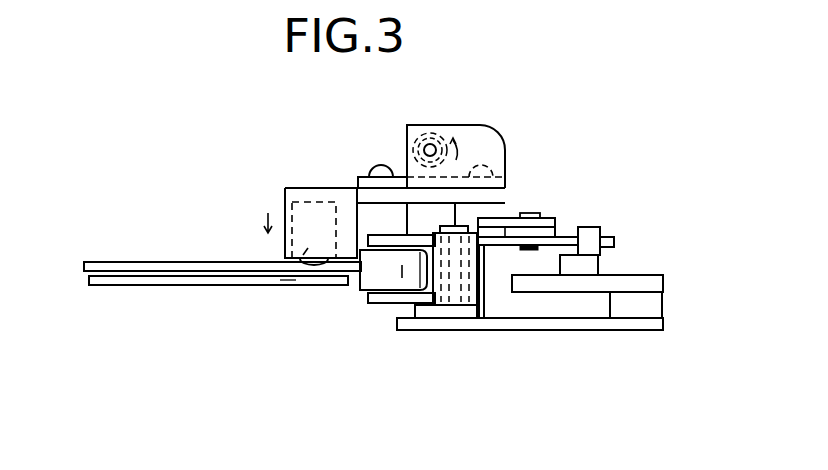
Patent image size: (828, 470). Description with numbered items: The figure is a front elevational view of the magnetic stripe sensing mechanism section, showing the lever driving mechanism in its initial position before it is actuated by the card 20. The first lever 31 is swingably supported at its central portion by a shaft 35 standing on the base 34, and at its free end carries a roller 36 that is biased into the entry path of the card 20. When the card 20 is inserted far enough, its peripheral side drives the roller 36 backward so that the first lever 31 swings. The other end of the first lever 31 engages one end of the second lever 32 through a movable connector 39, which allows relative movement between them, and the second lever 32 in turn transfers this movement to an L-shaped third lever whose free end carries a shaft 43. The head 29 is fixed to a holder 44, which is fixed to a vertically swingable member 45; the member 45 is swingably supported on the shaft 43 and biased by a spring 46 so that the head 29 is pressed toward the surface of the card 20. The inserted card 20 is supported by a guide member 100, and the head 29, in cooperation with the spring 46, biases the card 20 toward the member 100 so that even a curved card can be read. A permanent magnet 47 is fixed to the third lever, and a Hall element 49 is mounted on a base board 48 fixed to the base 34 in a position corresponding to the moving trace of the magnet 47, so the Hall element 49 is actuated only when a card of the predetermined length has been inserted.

The guide member 100 is at (103, 284).
The card 20 is at (193, 272).
The head 29 is at (288, 283).
The roller 36 is at (361, 286).
The first lever 31 is at (415, 332).
The shaft 35 is at (452, 332).
The base 34 is at (518, 332).
The holder 44 is at (317, 193).
The vertically swingable member 45 is at (408, 160).
The spring 46 is at (429, 143).
The shaft 43 is at (436, 145).
The movable connector 39 is at (533, 212).
The second lever 32 is at (548, 217).
The permanent magnet 47 is at (597, 228).
The Hall element 49 is at (600, 265).
The base board 48 is at (652, 283).